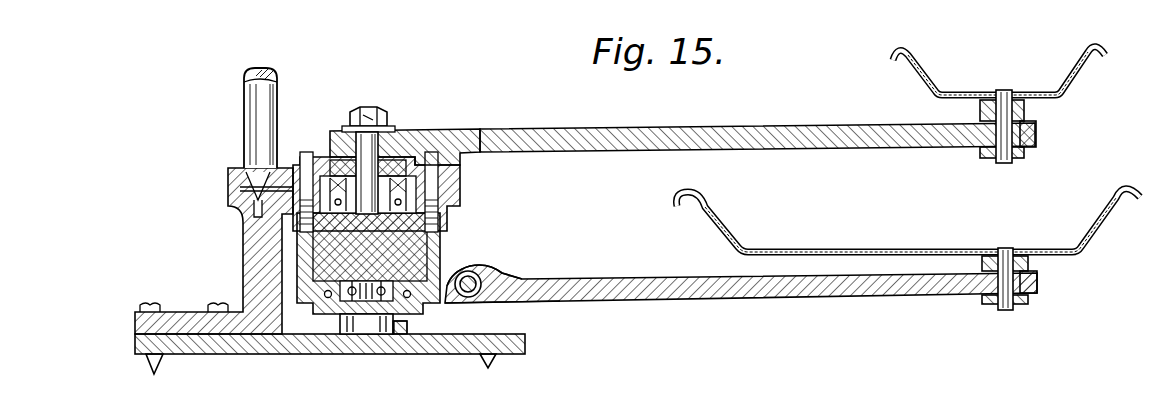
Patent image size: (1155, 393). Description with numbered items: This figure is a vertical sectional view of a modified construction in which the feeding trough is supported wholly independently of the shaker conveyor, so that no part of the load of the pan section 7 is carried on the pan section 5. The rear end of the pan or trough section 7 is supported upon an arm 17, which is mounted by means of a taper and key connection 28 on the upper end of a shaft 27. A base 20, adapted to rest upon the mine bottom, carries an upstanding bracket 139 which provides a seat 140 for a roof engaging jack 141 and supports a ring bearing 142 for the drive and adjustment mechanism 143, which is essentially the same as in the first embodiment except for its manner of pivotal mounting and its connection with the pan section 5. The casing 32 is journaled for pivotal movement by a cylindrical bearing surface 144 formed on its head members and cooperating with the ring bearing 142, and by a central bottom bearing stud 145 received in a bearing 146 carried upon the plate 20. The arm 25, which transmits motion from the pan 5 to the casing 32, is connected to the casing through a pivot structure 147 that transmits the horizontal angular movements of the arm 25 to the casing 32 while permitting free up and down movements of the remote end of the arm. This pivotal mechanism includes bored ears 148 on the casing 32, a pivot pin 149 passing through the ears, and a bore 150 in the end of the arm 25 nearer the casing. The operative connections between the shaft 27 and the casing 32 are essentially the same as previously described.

The pan section 5 is at (1096, 229).
The pan section 7 is at (930, 76).
The arm 17 is at (743, 127).
The base 20 is at (311, 353).
The arm 25 is at (715, 300).
The shaft 27 is at (381, 162).
The taper and key connection 28 is at (378, 136).
The casing 32 is at (440, 247).
The bracket 139 is at (244, 263).
The seat 140 is at (249, 180).
The roof engaging jack 141 is at (252, 105).
The ring bearing 142 is at (463, 186).
The drive and adjustment mechanism 143 is at (462, 164).
The cylindrical bearing surface 144 is at (240, 189).
The central bottom bearing stud 145 is at (355, 323).
The bearing 146 is at (396, 335).
The pivot structure 147 is at (483, 266).
The bored ears 148 is at (449, 299).
The pivot pin 149 is at (491, 273).
The bore 150 is at (478, 290).